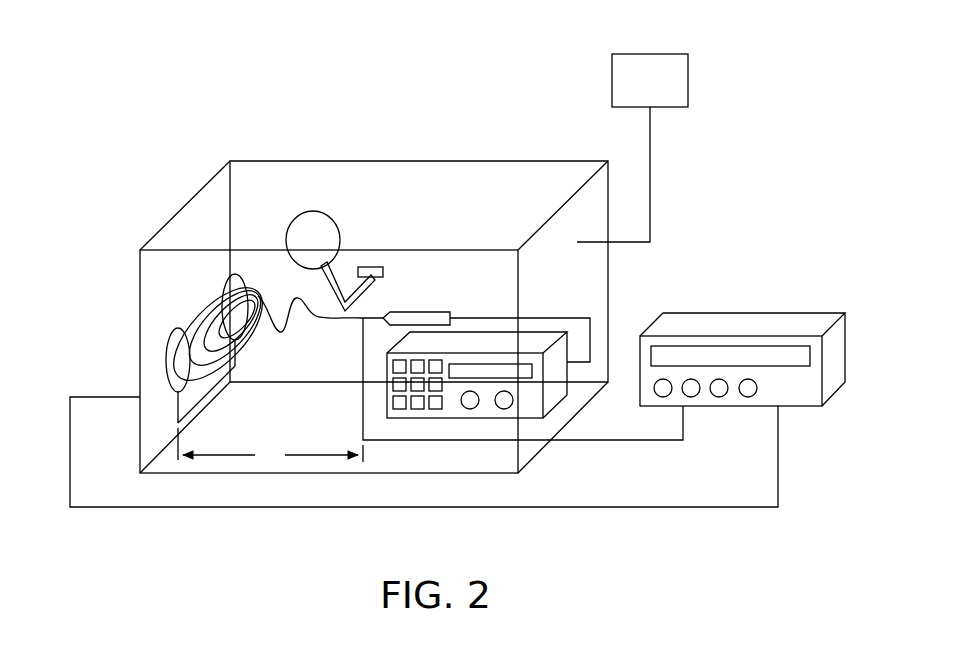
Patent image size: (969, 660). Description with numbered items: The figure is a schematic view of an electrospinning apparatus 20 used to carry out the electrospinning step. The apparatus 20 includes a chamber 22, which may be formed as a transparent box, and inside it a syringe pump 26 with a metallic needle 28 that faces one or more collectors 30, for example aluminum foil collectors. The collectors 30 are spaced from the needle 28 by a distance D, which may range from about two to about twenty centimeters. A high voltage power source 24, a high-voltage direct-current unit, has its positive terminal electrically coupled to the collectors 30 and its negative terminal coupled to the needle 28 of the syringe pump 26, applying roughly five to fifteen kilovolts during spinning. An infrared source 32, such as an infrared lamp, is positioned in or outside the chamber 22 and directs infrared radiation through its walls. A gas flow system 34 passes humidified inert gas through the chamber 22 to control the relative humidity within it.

The electrospinning apparatus 20 is at (716, 217).
The chamber 22 is at (198, 192).
The high voltage power source 24 is at (775, 318).
The syringe pump 26 is at (387, 370).
The needle 28 is at (417, 312).
The collectors 30 is at (214, 286).
The infrared source 32 is at (313, 211).
The gas flow system 34 is at (688, 82).